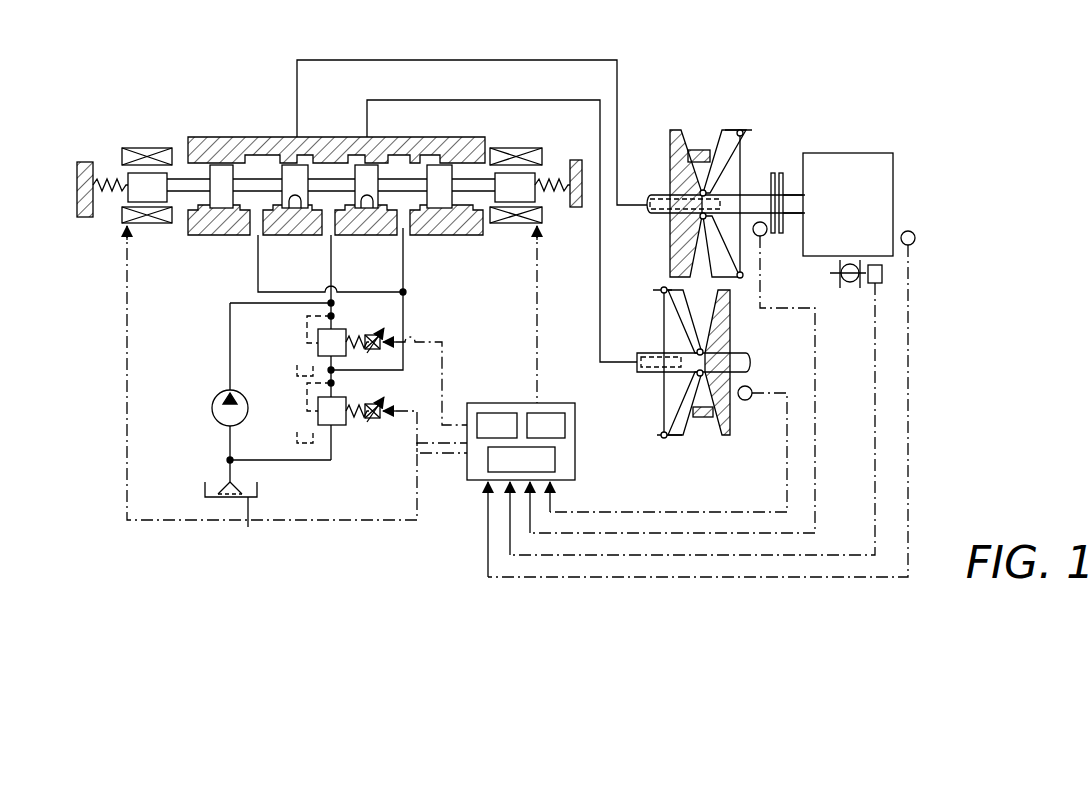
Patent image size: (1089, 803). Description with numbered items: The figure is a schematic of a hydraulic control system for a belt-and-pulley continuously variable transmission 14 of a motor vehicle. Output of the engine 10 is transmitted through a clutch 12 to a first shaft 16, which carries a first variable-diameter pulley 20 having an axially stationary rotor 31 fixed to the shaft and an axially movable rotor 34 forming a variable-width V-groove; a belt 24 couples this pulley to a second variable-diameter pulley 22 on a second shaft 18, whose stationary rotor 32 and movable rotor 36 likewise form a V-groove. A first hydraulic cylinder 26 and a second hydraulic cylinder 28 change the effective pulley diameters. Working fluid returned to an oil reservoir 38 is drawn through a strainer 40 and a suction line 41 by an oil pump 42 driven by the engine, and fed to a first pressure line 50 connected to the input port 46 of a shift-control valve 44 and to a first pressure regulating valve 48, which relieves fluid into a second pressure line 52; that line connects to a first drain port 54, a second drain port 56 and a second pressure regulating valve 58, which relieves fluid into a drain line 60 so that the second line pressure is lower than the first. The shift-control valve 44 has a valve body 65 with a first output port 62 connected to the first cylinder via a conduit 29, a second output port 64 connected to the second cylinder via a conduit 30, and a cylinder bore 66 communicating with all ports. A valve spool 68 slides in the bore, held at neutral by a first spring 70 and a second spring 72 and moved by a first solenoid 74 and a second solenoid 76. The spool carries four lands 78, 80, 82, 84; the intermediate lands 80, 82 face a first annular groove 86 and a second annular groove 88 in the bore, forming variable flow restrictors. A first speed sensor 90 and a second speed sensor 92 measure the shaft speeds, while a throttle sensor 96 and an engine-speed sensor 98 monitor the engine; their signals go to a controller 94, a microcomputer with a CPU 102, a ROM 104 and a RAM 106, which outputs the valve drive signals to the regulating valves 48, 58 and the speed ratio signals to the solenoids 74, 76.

The engine 10 is at (862, 152).
The clutch 12 is at (778, 180).
The continuously variable transmission 14 is at (741, 76).
The first shaft 16 is at (652, 200).
The second shaft 18 is at (650, 358).
The first variable-diameter pulley 20 is at (677, 116).
The second variable-diameter pulley 22 is at (653, 278).
The belt 24 is at (705, 418).
The first hydraulic cylinder 26 is at (741, 170).
The second hydraulic cylinder 28 is at (664, 405).
The conduit 29 is at (440, 60).
The conduit 30 is at (570, 100).
The axially stationary rotor 31 is at (670, 146).
The axially stationary rotor 32 is at (727, 438).
The axially movable rotor 34 is at (735, 128).
The axially movable rotor 36 is at (670, 440).
The oil reservoir 38 is at (247, 526).
The strainer 40 is at (222, 491).
The suction line 41 is at (230, 440).
The oil pump 42 is at (212, 408).
The shift-control valve 44 is at (113, 100).
The input port 46 is at (336, 232).
The first pressure regulating valve 48 is at (318, 343).
The first pressure line 50 is at (229, 334).
The second pressure line 52 is at (383, 413).
The first drain port 54 is at (236, 215).
The second drain port 56 is at (442, 212).
The second pressure regulating valve 58 is at (344, 425).
The drain line 60 is at (304, 461).
The first output port 62 is at (285, 140).
The second output port 64 is at (352, 158).
The valve body 65 is at (207, 140).
The cylinder bore 66 is at (188, 208).
The valve spool 68 is at (458, 198).
The first spring 70 is at (108, 196).
The second spring 72 is at (562, 206).
The first solenoid 74 is at (137, 140).
The second solenoid 76 is at (513, 226).
The land 78 is at (228, 140).
The land 80 is at (262, 140).
The land 82 is at (406, 142).
The land 84 is at (480, 150).
The first annular groove 86 is at (298, 212).
The second annular groove 88 is at (368, 212).
The first speed sensor 90 is at (765, 238).
The second speed sensor 92 is at (752, 388).
The controller 94 is at (520, 403).
The throttle sensor 96 is at (870, 284).
The engine-speed sensor 98 is at (911, 231).
The CPU 102 is at (545, 423).
The ROM 104 is at (495, 413).
The RAM 106 is at (552, 413).